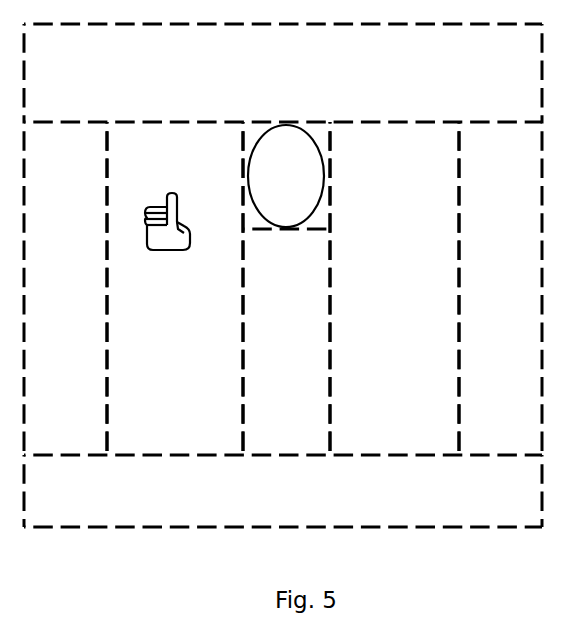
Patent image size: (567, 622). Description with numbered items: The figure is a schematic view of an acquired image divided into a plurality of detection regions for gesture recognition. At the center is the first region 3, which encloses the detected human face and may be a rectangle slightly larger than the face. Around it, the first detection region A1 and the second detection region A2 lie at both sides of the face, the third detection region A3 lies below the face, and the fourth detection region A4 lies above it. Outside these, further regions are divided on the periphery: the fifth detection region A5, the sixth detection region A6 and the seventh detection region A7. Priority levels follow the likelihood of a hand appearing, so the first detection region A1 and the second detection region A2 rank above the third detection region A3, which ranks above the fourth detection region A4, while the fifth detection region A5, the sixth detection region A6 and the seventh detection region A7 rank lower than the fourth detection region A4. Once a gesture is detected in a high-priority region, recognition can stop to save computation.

The first region 3 is at (288, 176).
The first detection region A1 is at (175, 288).
The second detection region A2 is at (394, 288).
The third detection region A3 is at (286, 288).
The fourth detection region A4 is at (283, 73).
The fifth detection region A5 is at (65, 288).
The sixth detection region A6 is at (500, 288).
The seventh detection region A7 is at (283, 491).